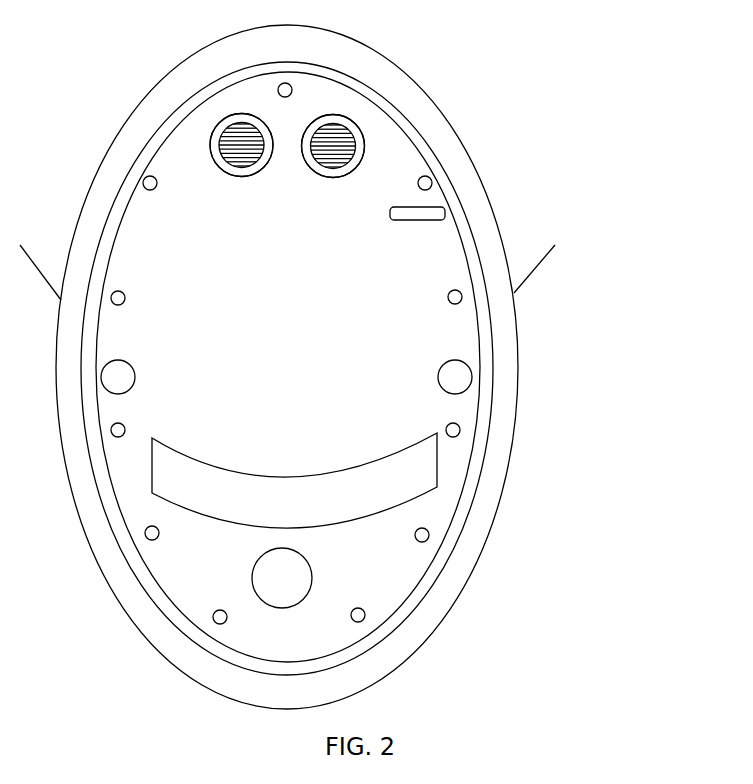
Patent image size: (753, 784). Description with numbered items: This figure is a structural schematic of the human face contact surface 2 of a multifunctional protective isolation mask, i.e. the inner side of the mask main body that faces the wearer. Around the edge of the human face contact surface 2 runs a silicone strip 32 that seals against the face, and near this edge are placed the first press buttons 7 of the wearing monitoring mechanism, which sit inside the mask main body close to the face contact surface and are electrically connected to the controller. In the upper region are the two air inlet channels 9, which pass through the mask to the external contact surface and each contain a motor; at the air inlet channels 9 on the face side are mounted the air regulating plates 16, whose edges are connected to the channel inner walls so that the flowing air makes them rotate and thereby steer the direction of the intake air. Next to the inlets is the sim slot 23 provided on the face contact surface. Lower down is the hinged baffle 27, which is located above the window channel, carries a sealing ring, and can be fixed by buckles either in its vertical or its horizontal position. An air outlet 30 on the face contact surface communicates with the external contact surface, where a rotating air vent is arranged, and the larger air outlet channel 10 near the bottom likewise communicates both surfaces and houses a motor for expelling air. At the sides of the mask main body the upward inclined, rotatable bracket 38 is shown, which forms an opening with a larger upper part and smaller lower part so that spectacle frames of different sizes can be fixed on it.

The human face contact surface 2 is at (385, 347).
The first press button 7 is at (453, 430).
The air inlet channels 9 is at (272, 162).
The air outlet channel 10 is at (282, 578).
The air regulating plates 16 is at (263, 122).
The sim slot 23 is at (432, 210).
The baffle 27 is at (325, 483).
The air outlet 30 is at (452, 377).
The silicone strip 32 is at (472, 238).
The bracket 38 is at (514, 293).